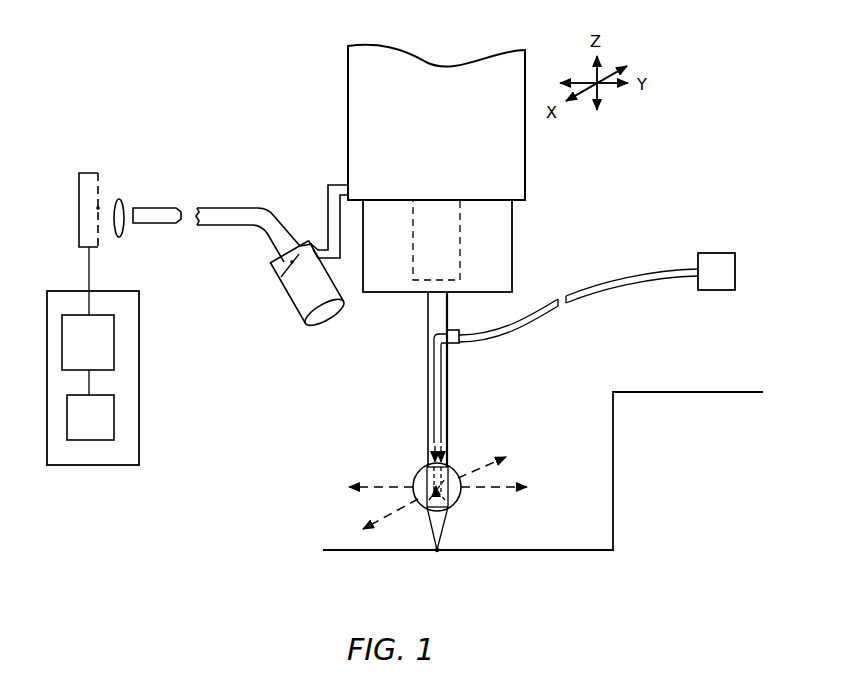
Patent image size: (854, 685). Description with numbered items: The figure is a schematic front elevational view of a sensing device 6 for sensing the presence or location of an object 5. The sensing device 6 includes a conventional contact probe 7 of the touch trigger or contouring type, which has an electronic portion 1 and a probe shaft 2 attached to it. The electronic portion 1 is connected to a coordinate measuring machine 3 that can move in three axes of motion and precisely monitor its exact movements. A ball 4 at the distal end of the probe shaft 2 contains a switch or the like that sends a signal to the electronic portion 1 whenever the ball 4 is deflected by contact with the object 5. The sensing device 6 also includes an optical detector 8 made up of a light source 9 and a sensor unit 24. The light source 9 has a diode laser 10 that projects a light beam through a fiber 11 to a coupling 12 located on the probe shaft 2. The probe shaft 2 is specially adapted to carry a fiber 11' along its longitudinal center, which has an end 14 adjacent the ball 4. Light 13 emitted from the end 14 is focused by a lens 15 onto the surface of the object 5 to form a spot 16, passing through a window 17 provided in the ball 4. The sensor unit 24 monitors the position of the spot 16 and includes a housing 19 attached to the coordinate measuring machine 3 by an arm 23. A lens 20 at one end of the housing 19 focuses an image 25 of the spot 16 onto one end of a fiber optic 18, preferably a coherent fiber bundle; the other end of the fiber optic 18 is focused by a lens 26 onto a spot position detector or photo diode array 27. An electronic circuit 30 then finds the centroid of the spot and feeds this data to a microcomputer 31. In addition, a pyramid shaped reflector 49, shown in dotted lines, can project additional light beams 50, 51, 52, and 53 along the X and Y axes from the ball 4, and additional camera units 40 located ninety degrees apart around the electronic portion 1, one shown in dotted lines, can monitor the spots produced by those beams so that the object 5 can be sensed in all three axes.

The electronic portion 1 is at (487, 245).
The probe shaft 2 is at (448, 400).
The coordinate measuring machine 3 is at (441, 141).
The ball 4 is at (414, 478).
The object 5 is at (666, 484).
The sensing device 6 is at (537, 179).
The contact probe 7 is at (372, 410).
The optical detector 8 is at (203, 418).
The light source 9 is at (606, 295).
The diode laser 10 is at (735, 271).
The fiber 11 is at (578, 286).
The fiber 11' is at (458, 388).
The coupling 12 is at (455, 330).
The light 13 is at (431, 460).
The end 14 is at (434, 452).
The lens 15 is at (448, 467).
The spot 16 is at (437, 552).
The window 17 is at (428, 513).
The fiber optic 18 is at (257, 205).
The housing 19 is at (310, 246).
The lens 20 is at (327, 312).
The arm 23 is at (326, 204).
The sensor unit 24 is at (286, 310).
The image 25 is at (291, 264).
The lens 26 is at (119, 199).
The spot position detector or photo diode array 27 is at (87, 173).
The electronic circuit 30 is at (100, 355).
The microcomputer 31 is at (100, 432).
The camera units 40 is at (416, 224).
The pyramid shaped reflector 49 is at (447, 497).
The light beam 50 is at (355, 481).
The light beam 51 is at (369, 524).
The light beam 52 is at (513, 495).
The light beam 53 is at (505, 456).